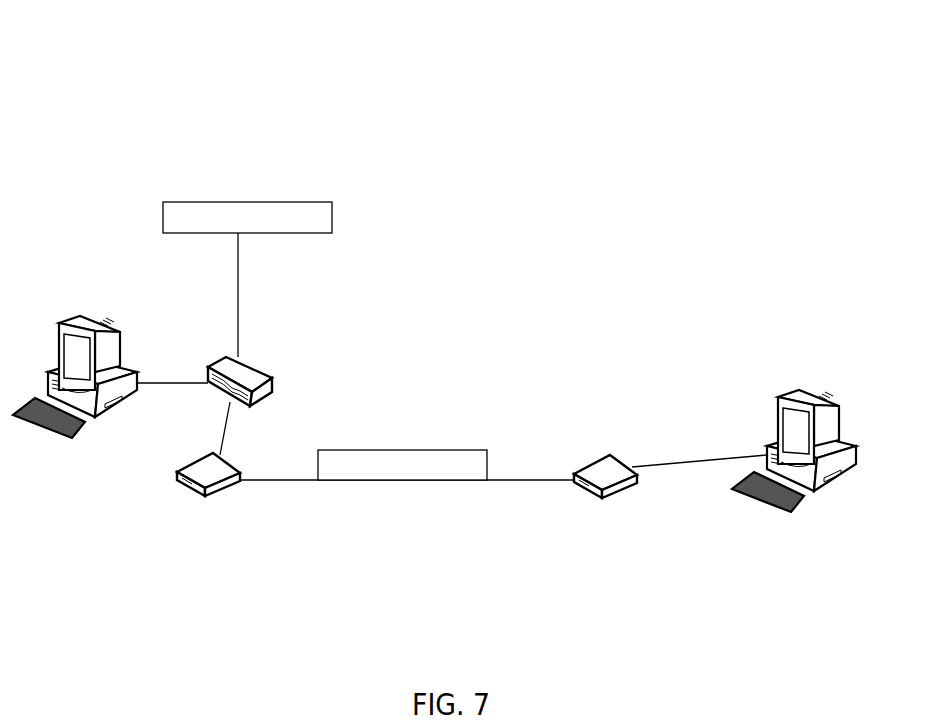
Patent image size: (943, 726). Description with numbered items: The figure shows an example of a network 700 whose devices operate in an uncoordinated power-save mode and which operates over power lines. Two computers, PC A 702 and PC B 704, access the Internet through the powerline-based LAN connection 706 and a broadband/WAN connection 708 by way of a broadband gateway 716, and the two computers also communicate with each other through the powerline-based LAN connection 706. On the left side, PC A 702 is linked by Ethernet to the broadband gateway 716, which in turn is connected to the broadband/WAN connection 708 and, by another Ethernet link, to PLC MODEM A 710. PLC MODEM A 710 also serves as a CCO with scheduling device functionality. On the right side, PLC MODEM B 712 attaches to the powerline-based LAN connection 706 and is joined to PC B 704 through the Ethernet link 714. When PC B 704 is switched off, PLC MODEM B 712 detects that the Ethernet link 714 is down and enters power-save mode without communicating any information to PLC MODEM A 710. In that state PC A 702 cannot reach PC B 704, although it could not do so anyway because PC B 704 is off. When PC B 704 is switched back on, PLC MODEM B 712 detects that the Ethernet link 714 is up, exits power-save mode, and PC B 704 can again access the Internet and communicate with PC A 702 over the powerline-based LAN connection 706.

The network 700 is at (238, 88).
The PC A 702 is at (59, 323).
The PC B 704 is at (778, 397).
The powerline-based LAN connection 706 is at (390, 450).
The broadband/WAN connection 708 is at (190, 203).
The PLC MODEM A 710 is at (190, 465).
The PLC MODEM B 712 is at (595, 460).
The Ethernet link 714 is at (668, 424).
The broadband gateway 716 is at (212, 360).